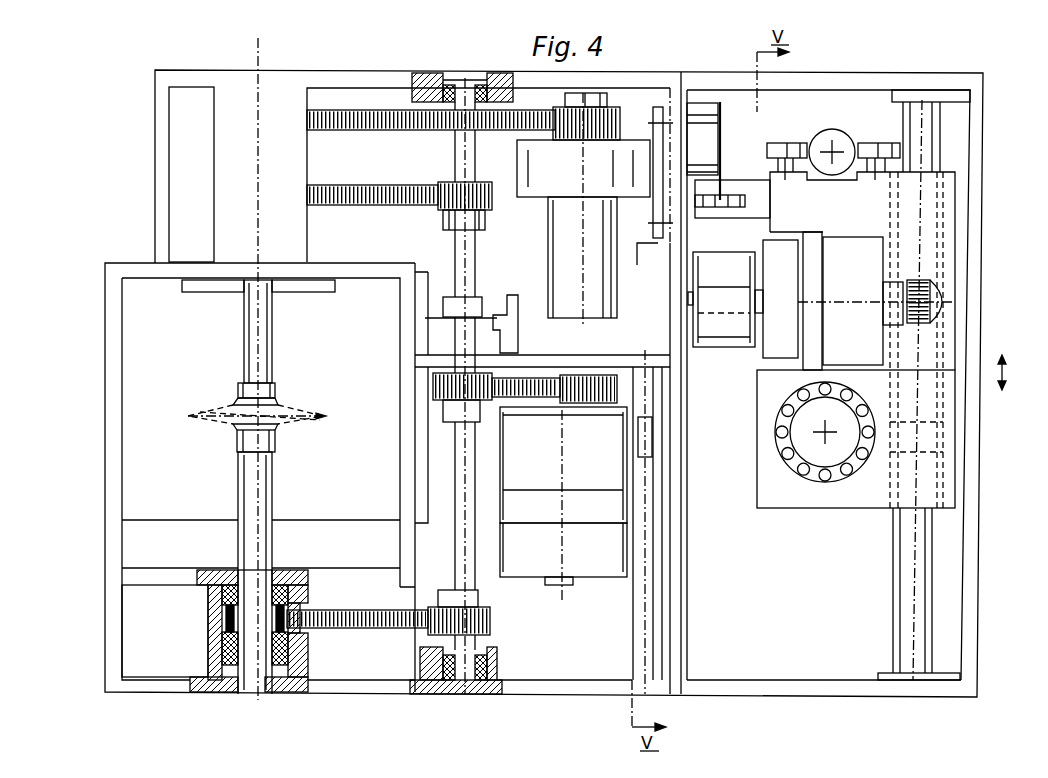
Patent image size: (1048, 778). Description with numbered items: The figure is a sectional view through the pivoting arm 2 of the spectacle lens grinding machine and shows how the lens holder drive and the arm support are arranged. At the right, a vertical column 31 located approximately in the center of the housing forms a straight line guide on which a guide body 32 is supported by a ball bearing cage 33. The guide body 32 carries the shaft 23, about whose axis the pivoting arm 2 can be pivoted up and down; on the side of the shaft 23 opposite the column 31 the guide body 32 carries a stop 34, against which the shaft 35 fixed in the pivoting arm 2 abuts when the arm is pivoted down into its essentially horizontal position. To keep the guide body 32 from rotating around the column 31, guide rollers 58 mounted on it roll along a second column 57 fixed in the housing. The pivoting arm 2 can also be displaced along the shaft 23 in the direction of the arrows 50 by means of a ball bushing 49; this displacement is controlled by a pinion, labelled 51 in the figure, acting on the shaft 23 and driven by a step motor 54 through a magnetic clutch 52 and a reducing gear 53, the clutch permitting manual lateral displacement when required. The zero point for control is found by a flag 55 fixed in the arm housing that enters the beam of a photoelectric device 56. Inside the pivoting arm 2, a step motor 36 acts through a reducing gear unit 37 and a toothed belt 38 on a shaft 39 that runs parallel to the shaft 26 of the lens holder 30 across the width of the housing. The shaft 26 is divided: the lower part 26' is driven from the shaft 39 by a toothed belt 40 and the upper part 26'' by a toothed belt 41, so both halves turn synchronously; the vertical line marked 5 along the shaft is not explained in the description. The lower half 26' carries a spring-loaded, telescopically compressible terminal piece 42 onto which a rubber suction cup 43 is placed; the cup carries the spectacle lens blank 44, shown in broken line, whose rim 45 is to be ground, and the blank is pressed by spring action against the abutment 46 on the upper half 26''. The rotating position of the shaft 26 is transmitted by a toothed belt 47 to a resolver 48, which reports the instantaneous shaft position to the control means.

The pivoting arm 2 is at (365, 77).
The axis of rotation 5 is at (264, 54).
The shaft 23 is at (907, 586).
The shaft of the lens holder 26 is at (230, 486).
The lower part of lens holder shaft 26' is at (235, 613).
The upper part of lens holder shaft 26'' is at (230, 331).
The lens holder 30 is at (300, 370).
The vertical column 31 is at (831, 456).
The guide body 32 is at (819, 219).
The ball bearing cage 33 is at (803, 473).
The stop 34 is at (654, 458).
The shaft 35 is at (656, 512).
The step motor 36 is at (596, 568).
The reducing gear unit 37 is at (544, 466).
The toothed belt 38 is at (500, 401).
The shaft 39 is at (467, 531).
The toothed belt 40 is at (393, 629).
The toothed belt 41 is at (378, 186).
The terminal piece 42 is at (273, 490).
The rubber suction cup 43 is at (277, 444).
The spectacle lens blank 44 is at (296, 413).
The rim 45 is at (196, 416).
The abutment 46 is at (276, 392).
The toothed belt 47 is at (510, 124).
The resolver 48 is at (606, 298).
The ball bushing 49 is at (940, 404).
The arrows 50 is at (1007, 373).
The pinion 51 is at (932, 289).
The magnetic clutch 52 is at (855, 243).
The reducing gear 53 is at (770, 348).
The step motor 54 is at (712, 342).
The flag 55 is at (723, 146).
The photoelectric device 56 is at (726, 206).
The second column 57 is at (843, 137).
The guide rollers 58 is at (795, 142).